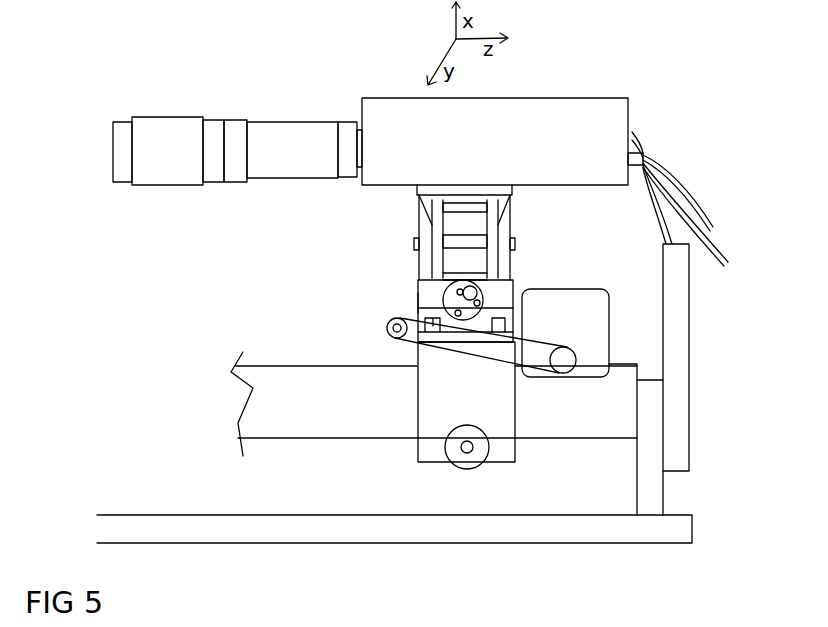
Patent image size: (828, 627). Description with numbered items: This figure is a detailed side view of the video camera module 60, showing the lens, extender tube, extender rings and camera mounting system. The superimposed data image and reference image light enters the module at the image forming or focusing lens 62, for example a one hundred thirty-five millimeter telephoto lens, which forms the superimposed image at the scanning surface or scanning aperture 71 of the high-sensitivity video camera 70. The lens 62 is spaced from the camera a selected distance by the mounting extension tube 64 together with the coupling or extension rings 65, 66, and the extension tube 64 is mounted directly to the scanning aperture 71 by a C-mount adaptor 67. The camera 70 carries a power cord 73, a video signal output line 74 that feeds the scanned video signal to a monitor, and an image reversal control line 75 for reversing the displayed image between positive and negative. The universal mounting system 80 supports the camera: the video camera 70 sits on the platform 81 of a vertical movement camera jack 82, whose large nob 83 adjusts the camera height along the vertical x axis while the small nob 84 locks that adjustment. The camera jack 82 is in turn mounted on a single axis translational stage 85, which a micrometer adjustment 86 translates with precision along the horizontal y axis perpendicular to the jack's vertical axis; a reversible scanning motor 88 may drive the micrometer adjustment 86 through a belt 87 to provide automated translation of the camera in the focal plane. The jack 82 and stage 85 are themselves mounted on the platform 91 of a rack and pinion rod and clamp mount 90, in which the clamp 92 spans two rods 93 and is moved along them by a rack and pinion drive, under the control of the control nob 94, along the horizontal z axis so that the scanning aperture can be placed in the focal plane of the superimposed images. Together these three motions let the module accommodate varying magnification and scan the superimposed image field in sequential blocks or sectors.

The video camera module 60 is at (77, 64).
The image forming or focusing lens 62 is at (158, 117).
The mounting extension tube 64 is at (298, 121).
The extension ring 65 is at (235, 119).
The extension ring 66 is at (215, 119).
The C-mount adaptor 67 is at (343, 121).
The video camera 70 is at (541, 99).
The scanning aperture 71 is at (357, 128).
The power cord 73 is at (716, 247).
The video signal output line 74 is at (681, 179).
The image reversal control line 75 is at (632, 133).
The universal mounting system 80 is at (356, 267).
The platform 81 is at (506, 188).
The vertical movement camera jack 82 is at (503, 250).
The large nob 83 is at (455, 296).
The small nob 84 is at (472, 295).
The single axis translational stage 85 is at (423, 318).
The micrometer adjustment 86 is at (390, 325).
The belt 87 is at (398, 340).
The scanning motor 88 is at (573, 296).
The rack and pinion rod and clamp mount 90 is at (567, 410).
The platform 91 is at (425, 350).
The clamp 92 is at (428, 415).
The rods 93 is at (283, 425).
The control nob 94 is at (477, 460).